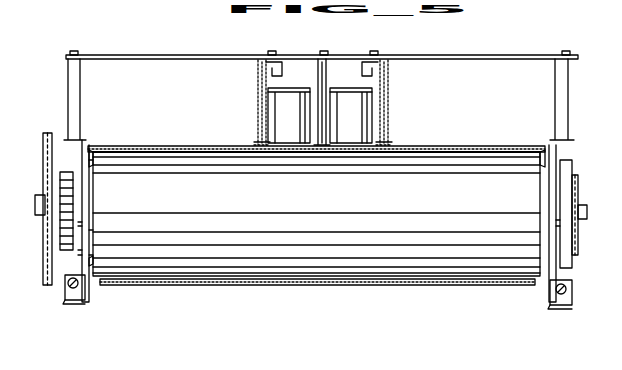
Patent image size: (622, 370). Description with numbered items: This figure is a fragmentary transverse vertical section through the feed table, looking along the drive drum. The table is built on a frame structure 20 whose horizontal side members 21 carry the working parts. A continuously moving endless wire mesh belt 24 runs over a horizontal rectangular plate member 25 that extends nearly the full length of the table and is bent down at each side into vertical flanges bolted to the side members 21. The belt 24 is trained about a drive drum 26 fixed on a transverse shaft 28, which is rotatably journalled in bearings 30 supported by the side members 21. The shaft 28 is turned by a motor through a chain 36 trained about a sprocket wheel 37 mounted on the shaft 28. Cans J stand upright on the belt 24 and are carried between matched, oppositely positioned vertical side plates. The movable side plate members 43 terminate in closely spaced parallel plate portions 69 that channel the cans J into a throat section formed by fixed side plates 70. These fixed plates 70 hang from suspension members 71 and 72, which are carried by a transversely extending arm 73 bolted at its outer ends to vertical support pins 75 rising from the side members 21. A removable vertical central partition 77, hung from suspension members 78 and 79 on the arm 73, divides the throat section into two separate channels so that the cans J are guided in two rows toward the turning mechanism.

The frame structure 20 is at (44, 293).
The side member 21 is at (112, 221).
The endless wire mesh belt 24 is at (316, 134).
The plate member 25 is at (316, 169).
The drive drum 26 is at (316, 214).
The transverse shaft 28 is at (35, 206).
The bearing 30 is at (104, 235).
The chain 36 is at (40, 220).
The sprocket wheel 37 is at (46, 185).
The movable side plate member 43 is at (253, 115).
The parallel plate portion 69 is at (239, 102).
The fixed side plate 70 is at (242, 128).
The suspension member 71 is at (270, 70).
The suspension member 72 is at (380, 64).
The transversely extending arm 73 is at (178, 53).
The vertical support pin 75 is at (89, 99).
The central partition 77 is at (334, 58).
The suspension member 78 is at (318, 73).
The suspension member 79 is at (326, 70).
The can J is at (290, 108).